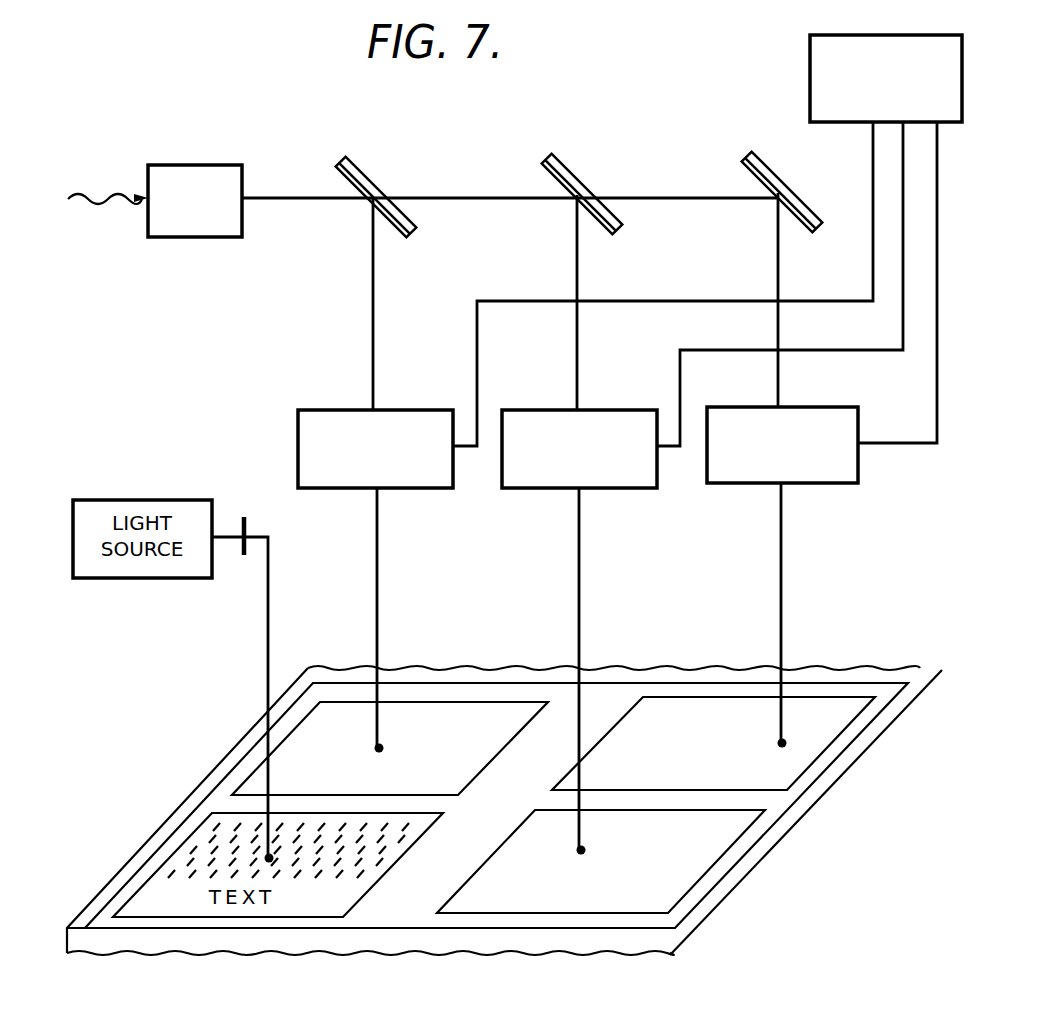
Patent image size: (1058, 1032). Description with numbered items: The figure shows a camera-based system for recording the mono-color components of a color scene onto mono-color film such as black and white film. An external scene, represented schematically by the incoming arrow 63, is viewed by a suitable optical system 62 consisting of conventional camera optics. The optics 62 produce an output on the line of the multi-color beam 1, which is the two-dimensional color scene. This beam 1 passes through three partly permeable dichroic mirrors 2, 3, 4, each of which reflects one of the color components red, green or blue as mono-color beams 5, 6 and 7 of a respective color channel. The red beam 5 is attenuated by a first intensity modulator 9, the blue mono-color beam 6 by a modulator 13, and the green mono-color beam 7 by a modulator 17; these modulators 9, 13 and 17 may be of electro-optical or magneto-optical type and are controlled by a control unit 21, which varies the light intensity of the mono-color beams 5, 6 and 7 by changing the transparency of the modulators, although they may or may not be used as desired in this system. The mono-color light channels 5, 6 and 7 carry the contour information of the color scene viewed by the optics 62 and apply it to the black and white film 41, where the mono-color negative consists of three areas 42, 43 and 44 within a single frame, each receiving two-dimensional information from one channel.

The multi-color beam 1 is at (243, 196).
The dichroic mirror 2 is at (383, 180).
The dichroic mirror 3 is at (589, 178).
The dichroic mirror 4 is at (777, 177).
The mono-color beam 5 is at (373, 235).
The mono-color beam 6 is at (577, 236).
The mono-color beam 7 is at (778, 248).
The first intensity modulator 9 is at (324, 410).
The modulator 13 is at (538, 412).
The modulator 17 is at (738, 408).
The control unit 21 is at (882, 40).
The mono-color film negative 41 is at (314, 923).
The area 42 is at (304, 728).
The area 43 is at (812, 737).
The area 44 is at (730, 830).
The optical system 62 is at (195, 201).
The incoming arrow 63 is at (111, 199).